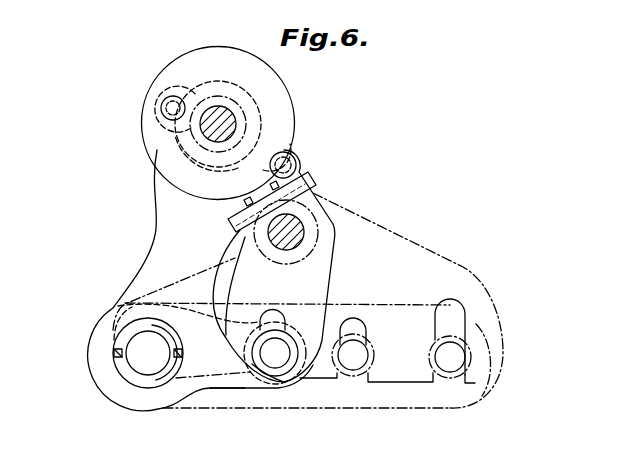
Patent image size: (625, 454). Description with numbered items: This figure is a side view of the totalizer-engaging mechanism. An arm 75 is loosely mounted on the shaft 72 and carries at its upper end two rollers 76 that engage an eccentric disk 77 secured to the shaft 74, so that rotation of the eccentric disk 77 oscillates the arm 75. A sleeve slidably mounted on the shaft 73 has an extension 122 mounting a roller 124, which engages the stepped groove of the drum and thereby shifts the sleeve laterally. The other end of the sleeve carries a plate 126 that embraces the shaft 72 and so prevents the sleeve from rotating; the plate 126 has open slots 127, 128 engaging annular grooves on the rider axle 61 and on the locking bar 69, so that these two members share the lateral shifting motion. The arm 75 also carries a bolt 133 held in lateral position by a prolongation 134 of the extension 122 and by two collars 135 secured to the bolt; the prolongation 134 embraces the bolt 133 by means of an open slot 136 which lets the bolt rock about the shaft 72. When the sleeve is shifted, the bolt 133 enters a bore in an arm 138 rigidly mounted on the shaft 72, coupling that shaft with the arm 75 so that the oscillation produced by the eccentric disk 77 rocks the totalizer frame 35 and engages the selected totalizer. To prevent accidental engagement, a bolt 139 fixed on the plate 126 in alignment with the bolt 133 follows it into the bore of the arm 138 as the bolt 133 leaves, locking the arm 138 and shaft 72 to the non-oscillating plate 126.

The totalizer frame 35 is at (488, 376).
The rider axle 61 is at (360, 376).
The locking bar 69 is at (456, 380).
The shaft 72 is at (137, 367).
The shaft 73 is at (298, 233).
The shaft 74 is at (211, 108).
The arm 75 is at (156, 234).
The rollers 76 is at (166, 127).
The eccentric disk 77 is at (277, 121).
The extension 122 is at (328, 279).
The roller 124 is at (246, 202).
The plate 126 is at (407, 241).
The open slot 127 is at (360, 320).
The open slot 128 is at (462, 315).
The bolt 133 is at (281, 366).
The prolongation 134 is at (236, 352).
The collars 135 is at (267, 376).
The open slot 136 is at (276, 313).
The arm 138 is at (222, 389).
The bolt 139 is at (295, 392).